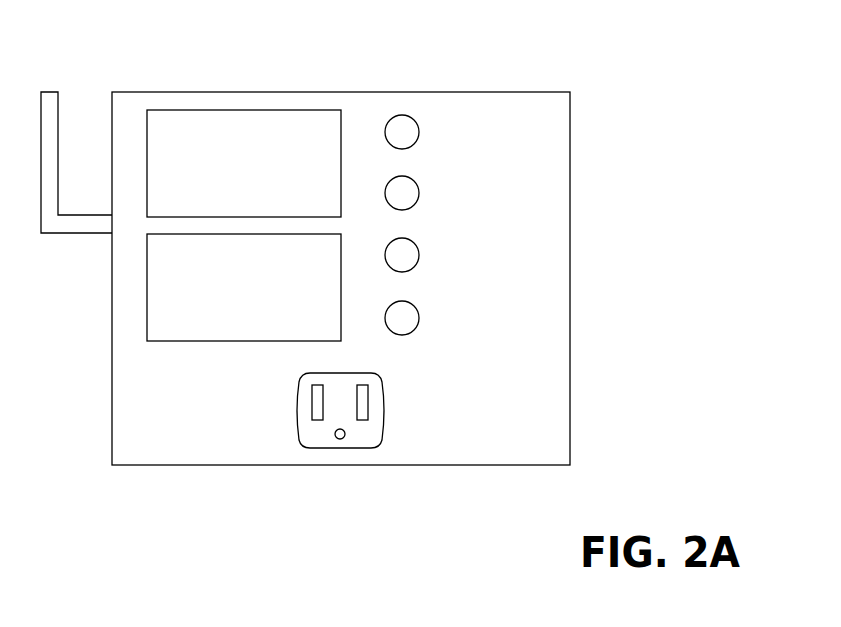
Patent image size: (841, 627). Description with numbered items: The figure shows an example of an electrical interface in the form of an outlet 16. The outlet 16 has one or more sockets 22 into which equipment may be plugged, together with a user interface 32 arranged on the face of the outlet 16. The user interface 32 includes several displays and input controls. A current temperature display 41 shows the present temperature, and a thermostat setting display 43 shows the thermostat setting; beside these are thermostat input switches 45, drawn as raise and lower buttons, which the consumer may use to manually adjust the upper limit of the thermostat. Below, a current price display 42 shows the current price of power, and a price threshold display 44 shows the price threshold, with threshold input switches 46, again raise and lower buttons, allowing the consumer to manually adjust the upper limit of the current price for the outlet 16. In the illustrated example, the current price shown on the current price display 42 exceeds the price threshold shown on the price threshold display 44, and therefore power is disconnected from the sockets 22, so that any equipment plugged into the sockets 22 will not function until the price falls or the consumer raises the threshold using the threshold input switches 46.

The outlet 16 is at (389, 269).
The sockets 22 is at (357, 450).
The user interface 32 is at (666, 142).
The current temperature display 41 is at (199, 120).
The current price display 42 is at (157, 268).
The thermostat setting display 43 is at (308, 116).
The price threshold display 44 is at (286, 350).
The thermostat input switches 45 is at (535, 120).
The threshold input switches 46 is at (545, 248).